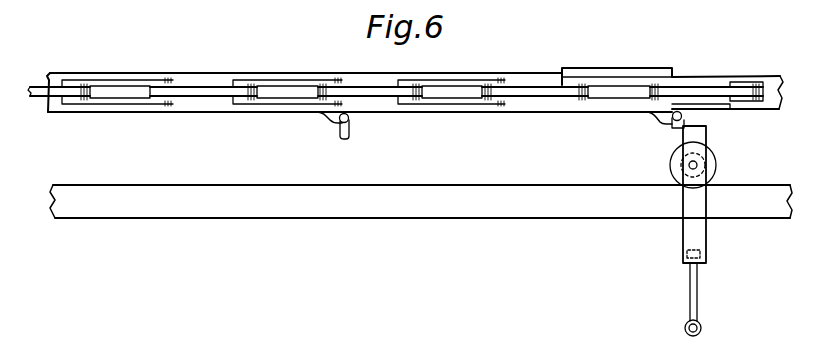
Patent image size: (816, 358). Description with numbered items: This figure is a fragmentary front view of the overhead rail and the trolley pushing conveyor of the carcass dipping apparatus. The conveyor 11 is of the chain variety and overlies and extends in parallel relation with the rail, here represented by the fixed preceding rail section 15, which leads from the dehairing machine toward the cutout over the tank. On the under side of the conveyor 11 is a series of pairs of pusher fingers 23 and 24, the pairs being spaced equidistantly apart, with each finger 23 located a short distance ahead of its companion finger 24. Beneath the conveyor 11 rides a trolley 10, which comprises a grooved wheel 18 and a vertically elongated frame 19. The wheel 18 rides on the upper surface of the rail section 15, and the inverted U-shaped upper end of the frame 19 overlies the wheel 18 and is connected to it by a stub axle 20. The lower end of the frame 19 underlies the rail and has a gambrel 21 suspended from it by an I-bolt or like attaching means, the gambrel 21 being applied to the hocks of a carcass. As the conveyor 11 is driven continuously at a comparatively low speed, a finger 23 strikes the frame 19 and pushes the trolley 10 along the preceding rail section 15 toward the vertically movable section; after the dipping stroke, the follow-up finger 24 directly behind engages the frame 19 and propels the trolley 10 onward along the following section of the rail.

The trolley 10 is at (744, 158).
The conveyor 11 is at (265, 104).
The preceding rail section 15 is at (543, 213).
The grooved wheel 18 is at (715, 155).
The trolley frame 19 is at (706, 236).
The stub axle 20 is at (689, 165).
The gambrel 21 is at (702, 328).
The pusher finger 23 is at (676, 124).
The follow-up pusher finger 24 is at (352, 131).